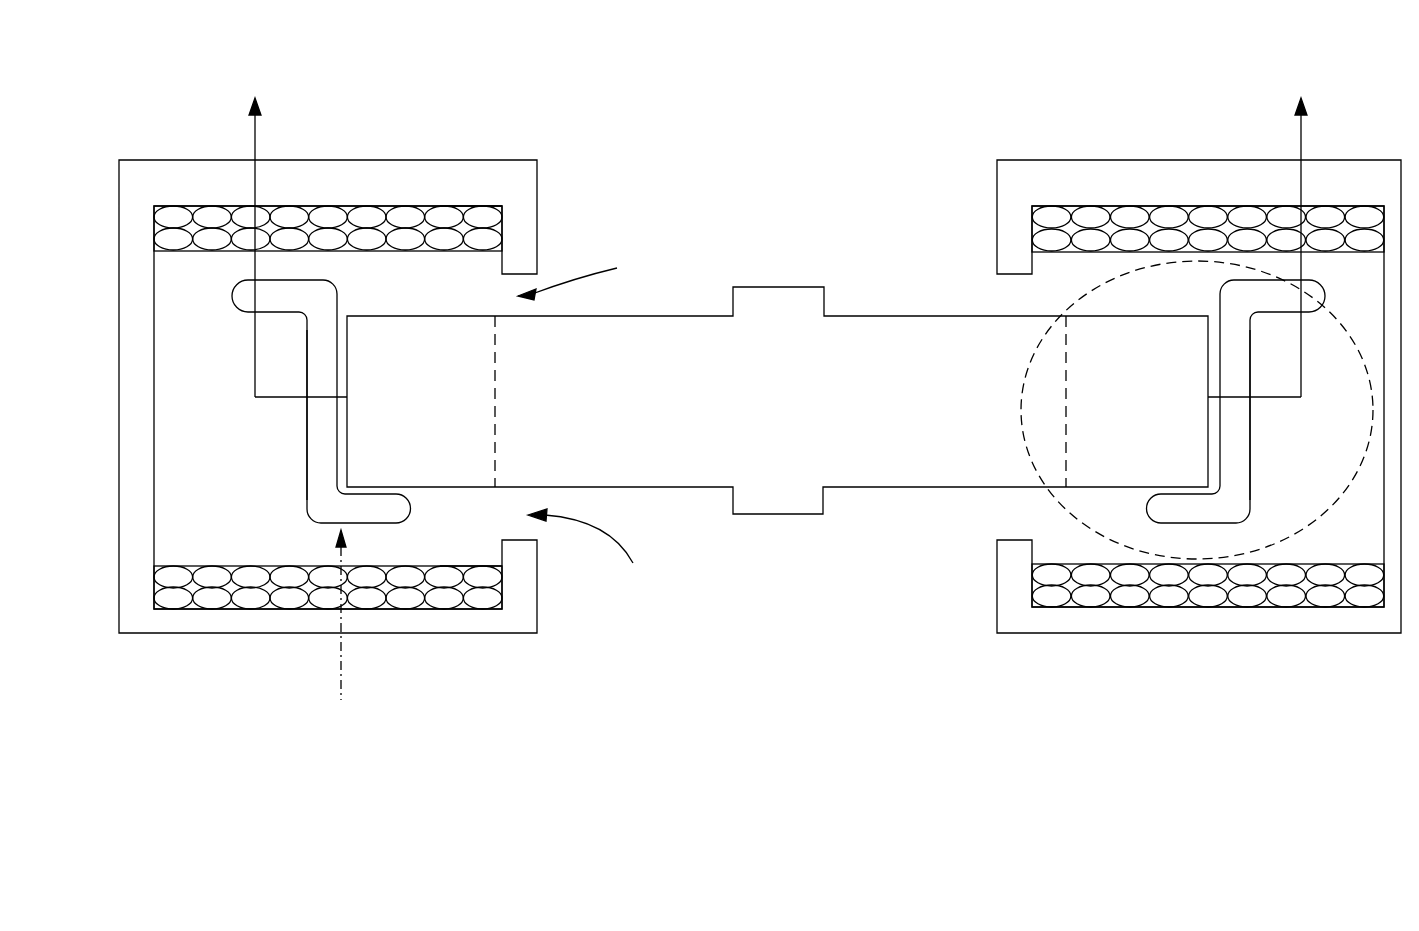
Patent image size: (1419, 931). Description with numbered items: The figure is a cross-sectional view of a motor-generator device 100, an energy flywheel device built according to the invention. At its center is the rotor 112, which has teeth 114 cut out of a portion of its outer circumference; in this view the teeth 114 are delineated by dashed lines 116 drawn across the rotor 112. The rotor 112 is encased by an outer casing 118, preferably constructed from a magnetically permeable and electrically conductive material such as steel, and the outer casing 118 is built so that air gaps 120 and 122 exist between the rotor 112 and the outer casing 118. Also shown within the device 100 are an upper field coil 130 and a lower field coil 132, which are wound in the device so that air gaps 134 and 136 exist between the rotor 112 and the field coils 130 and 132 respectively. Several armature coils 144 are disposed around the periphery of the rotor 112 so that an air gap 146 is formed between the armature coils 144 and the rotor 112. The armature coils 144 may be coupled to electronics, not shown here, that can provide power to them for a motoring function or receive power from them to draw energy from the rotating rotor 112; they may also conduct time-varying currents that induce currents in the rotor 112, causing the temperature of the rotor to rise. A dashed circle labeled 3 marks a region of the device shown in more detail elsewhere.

The motor-generator device 100 is at (803, 47).
The rotor 112 is at (867, 314).
The teeth 114 is at (387, 493).
The dashed lines 116 is at (497, 417).
The outer casing 118 is at (422, 160).
The air gap 120 is at (588, 277).
The air gap 122 is at (593, 552).
The upper field coil 130 is at (207, 217).
The lower field coil 132 is at (285, 572).
The air gap 134 is at (457, 273).
The air gap 136 is at (423, 543).
The armature coils 144 is at (306, 453).
The air gap 146 is at (343, 632).
The detail circle for FIG. 3 is at (1150, 266).